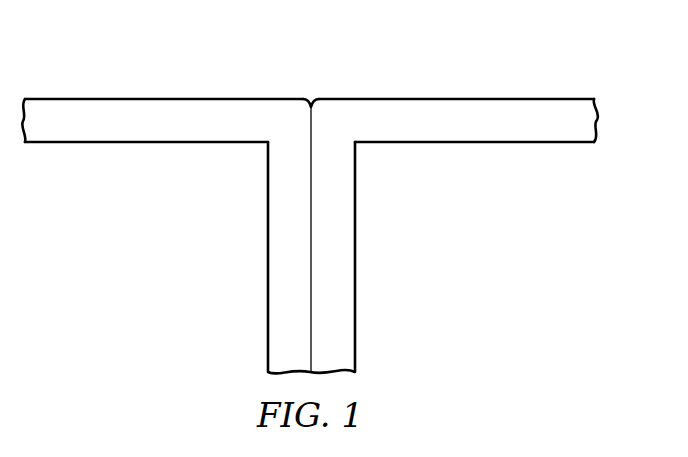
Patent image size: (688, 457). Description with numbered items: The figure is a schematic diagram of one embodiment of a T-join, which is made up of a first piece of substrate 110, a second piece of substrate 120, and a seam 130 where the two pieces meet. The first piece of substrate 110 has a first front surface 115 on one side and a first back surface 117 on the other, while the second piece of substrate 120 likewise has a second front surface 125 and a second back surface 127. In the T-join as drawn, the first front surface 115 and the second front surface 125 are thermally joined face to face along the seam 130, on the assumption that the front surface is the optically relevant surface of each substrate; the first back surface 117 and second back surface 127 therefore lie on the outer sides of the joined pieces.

The first piece of substrate 110 is at (162, 125).
The first front surface 115 is at (172, 98).
The first back surface 117 is at (172, 145).
The second piece of substrate 120 is at (458, 125).
The second front surface 125 is at (435, 98).
The second back surface 127 is at (440, 145).
The seam 130 is at (313, 95).